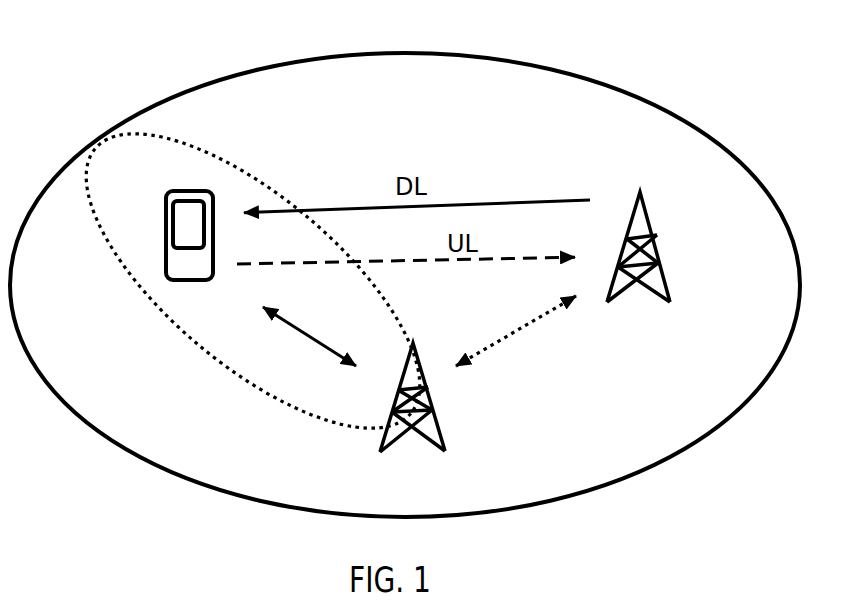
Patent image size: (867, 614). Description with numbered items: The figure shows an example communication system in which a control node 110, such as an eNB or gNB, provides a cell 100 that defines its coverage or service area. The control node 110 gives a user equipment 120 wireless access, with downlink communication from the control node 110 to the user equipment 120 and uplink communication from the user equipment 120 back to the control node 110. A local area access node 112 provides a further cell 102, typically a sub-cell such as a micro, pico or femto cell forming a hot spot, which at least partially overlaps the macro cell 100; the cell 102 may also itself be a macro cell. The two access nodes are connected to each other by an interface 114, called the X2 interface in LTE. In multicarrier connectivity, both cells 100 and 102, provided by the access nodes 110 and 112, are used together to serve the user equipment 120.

The cell 100 is at (225, 77).
The cell 102 is at (217, 357).
The control node 110 is at (645, 200).
The local area access node 112 is at (443, 445).
The interface 114 is at (507, 337).
The user equipment 120 is at (172, 192).